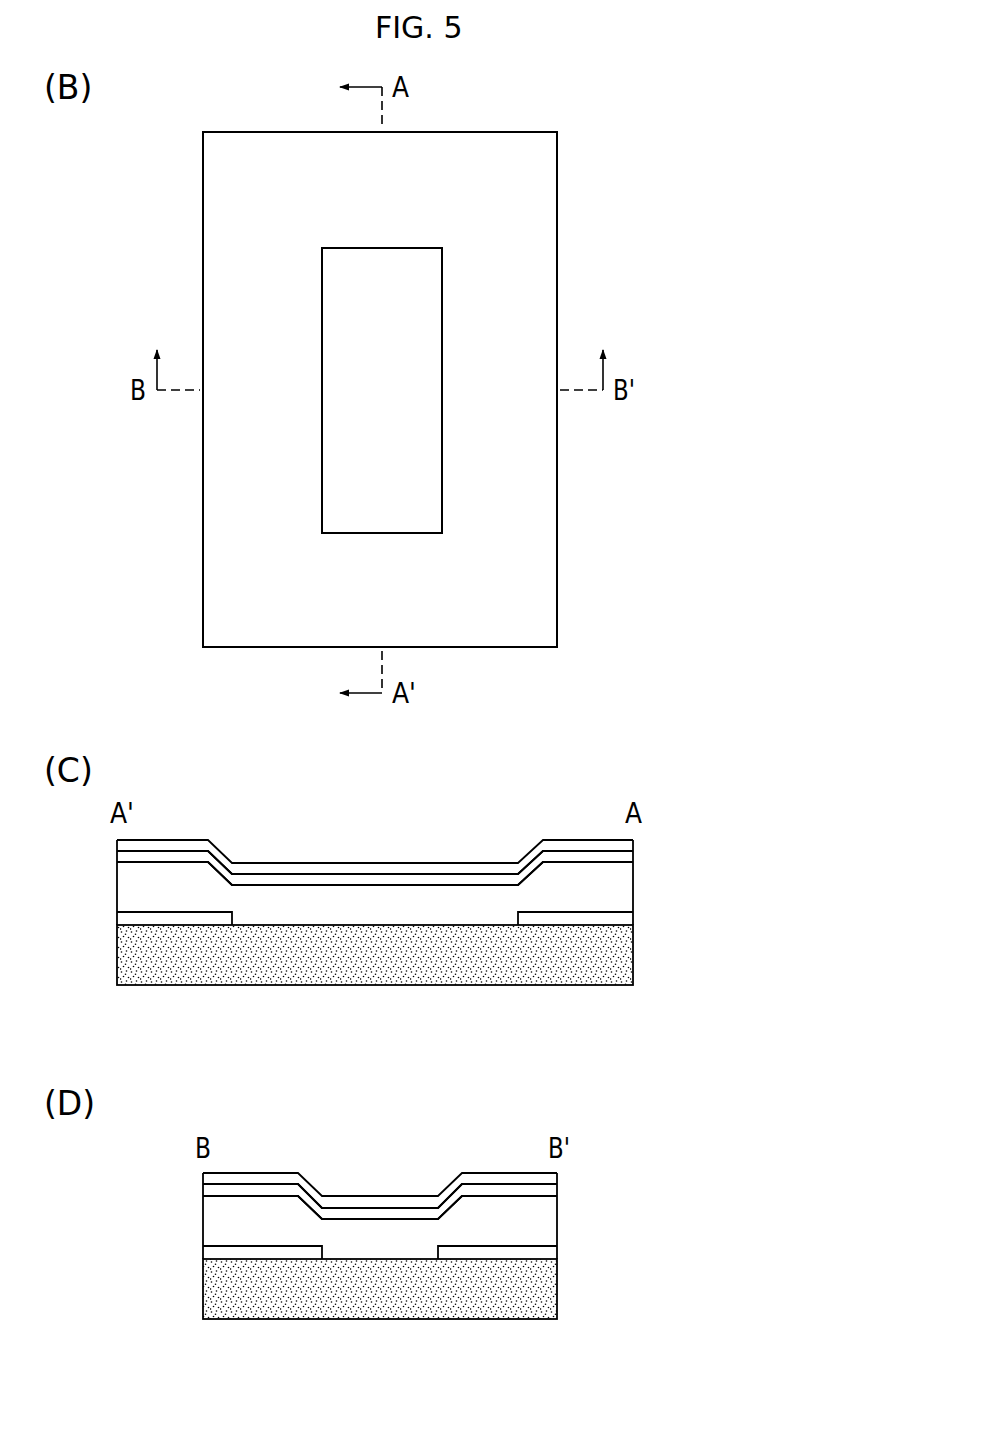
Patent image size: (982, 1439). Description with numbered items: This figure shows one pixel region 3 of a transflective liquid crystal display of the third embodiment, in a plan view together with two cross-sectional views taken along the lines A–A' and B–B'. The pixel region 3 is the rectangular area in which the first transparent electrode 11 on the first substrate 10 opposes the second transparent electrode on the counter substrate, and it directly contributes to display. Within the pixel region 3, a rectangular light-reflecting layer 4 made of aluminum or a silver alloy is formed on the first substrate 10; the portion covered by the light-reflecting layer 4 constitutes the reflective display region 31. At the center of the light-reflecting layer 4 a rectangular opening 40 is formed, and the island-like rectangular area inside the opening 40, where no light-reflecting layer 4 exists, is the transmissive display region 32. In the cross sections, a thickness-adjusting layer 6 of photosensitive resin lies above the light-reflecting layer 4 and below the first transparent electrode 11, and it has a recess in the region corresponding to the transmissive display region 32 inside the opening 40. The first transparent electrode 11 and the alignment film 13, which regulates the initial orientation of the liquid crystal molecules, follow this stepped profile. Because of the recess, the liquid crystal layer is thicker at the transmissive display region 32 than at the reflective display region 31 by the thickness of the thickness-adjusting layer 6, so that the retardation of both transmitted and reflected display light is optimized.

The pixel region 3 is at (565, 131).
The light-reflecting layer 4 is at (633, 918).
The thickness-adjusting layer 6 is at (633, 893).
The first substrate 10 is at (633, 955).
The first transparent electrode 11 is at (633, 855).
The alignment film 13 is at (633, 842).
The reflective display region 31 is at (380, 389).
The transmissive display region 32 is at (382, 390).
The opening 40 is at (442, 298).